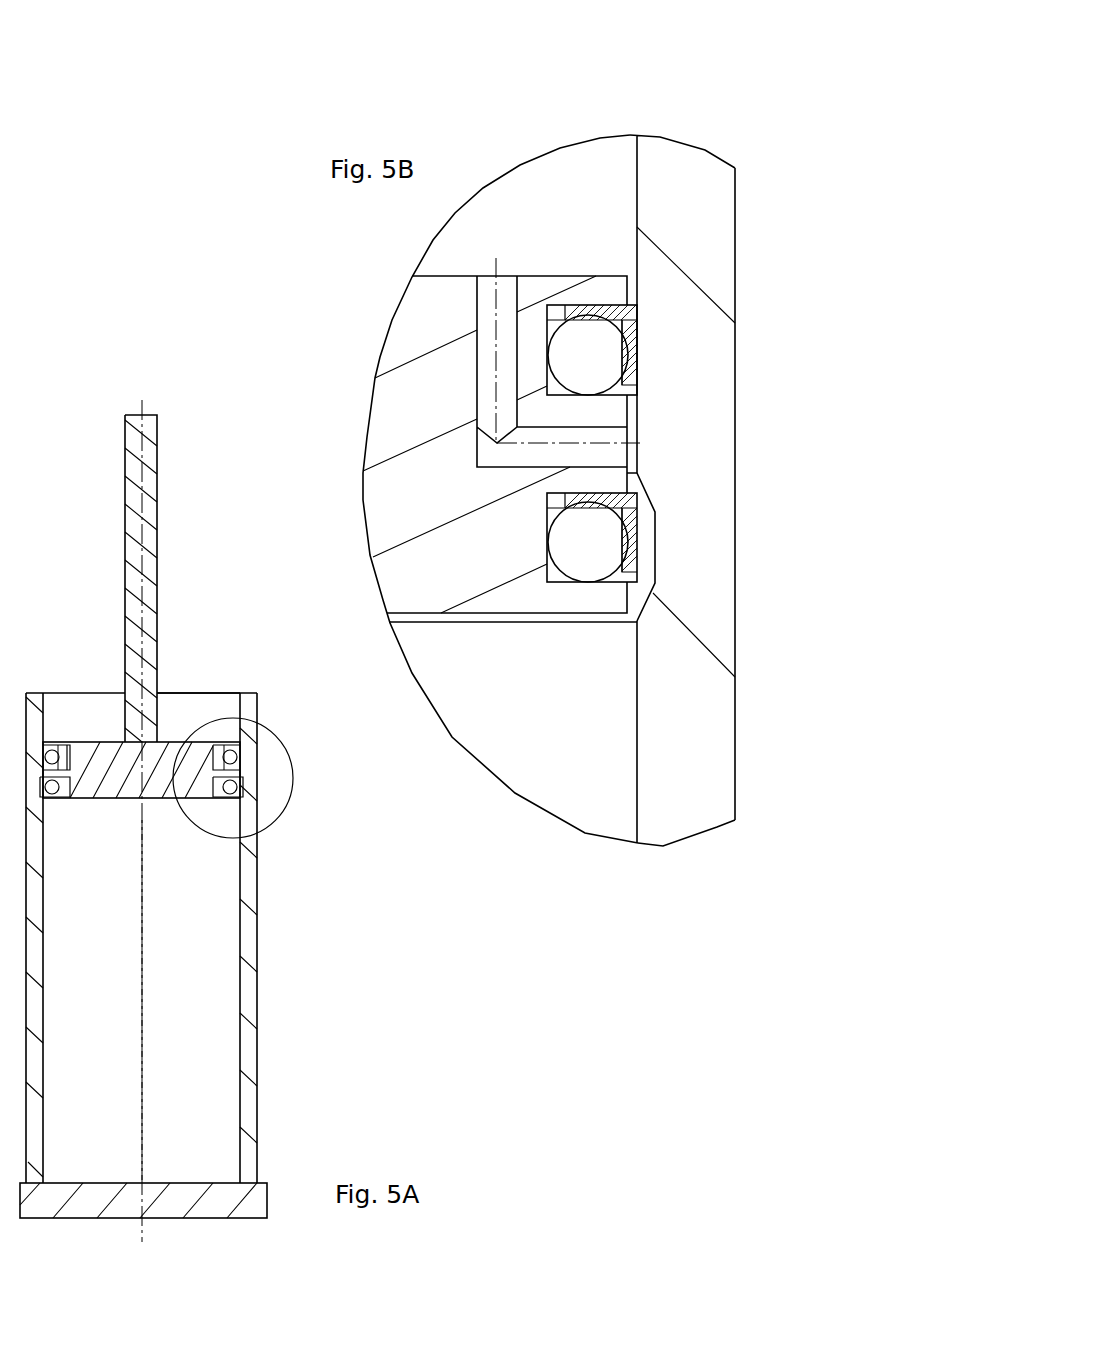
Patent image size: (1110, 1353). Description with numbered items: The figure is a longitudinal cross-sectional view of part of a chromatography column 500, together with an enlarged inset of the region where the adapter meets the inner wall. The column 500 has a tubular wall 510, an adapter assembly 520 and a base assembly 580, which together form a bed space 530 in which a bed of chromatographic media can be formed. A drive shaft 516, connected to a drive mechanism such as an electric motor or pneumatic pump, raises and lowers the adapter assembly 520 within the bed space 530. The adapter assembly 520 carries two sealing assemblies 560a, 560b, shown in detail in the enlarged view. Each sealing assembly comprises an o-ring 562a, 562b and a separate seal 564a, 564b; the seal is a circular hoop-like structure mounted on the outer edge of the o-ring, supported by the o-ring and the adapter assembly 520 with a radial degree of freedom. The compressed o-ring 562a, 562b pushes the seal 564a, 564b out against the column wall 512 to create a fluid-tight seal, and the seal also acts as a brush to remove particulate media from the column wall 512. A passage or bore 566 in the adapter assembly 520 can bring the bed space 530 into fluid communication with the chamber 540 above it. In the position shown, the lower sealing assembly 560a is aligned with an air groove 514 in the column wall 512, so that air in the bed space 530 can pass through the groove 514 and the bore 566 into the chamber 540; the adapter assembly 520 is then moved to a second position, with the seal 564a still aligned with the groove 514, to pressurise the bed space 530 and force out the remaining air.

In FIG. 5A, the column 500 is at (212, 955).
In FIG. 5A, the tubular wall 510 is at (255, 922).
In FIG. 5B, the column wall 512 is at (604, 200).
In FIG. 5B, the air groove 514 is at (637, 606).
In FIG. 5A, the drive shaft 516 is at (158, 510).
In FIG. 5A, the adapter assembly 520 is at (163, 743).
In FIG. 5A, the bed space 530 is at (178, 1003).
In FIG. 5A, the chamber 540 is at (218, 705).
In FIG. 5B, the chamber 540 is at (550, 185).
In FIG. 5B, the sealing assembly 560a is at (729, 561).
In FIG. 5B, the sealing assembly 560b is at (725, 327).
In FIG. 5B, the o-ring 562a is at (595, 542).
In FIG. 5B, the o-ring 562b is at (590, 355).
In FIG. 5B, the seal 564a is at (625, 503).
In FIG. 5B, the seal 564b is at (627, 313).
In FIG. 5B, the passage or bore 566 is at (597, 452).
In FIG. 5A, the base assembly 580 is at (257, 1198).